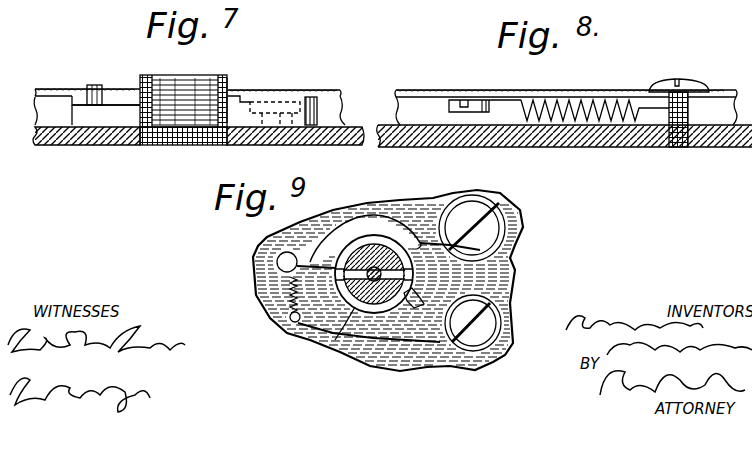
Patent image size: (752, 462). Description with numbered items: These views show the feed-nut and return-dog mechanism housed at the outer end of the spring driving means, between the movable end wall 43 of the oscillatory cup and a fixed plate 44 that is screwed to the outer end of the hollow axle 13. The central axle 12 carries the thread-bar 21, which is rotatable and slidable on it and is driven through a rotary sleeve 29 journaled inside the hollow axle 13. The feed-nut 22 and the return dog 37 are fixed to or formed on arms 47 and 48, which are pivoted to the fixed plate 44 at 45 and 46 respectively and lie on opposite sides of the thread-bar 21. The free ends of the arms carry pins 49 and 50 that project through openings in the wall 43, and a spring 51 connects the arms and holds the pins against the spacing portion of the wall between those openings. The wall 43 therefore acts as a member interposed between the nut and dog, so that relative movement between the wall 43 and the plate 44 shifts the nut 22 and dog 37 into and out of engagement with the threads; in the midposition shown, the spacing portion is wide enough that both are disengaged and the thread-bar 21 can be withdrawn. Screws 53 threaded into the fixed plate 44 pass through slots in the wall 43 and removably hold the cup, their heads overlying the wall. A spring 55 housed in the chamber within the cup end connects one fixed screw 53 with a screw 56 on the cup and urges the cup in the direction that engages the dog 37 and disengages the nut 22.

In FIG. 9, the central axle 12 is at (378, 243).
In FIG. 9, the hollow axle 13 is at (511, 257).
In FIG. 9, the thread-bar 21 is at (376, 294).
In FIG. 7, the feed-nut 22 is at (207, 80).
In FIG. 9, the feed-nut 22 is at (400, 246).
In FIG. 9, the rotary sleeve 29 is at (411, 308).
In FIG. 9, the return dog 37 is at (358, 306).
In FIG. 7, the end wall of the cup 43 is at (310, 97).
In FIG. 8, the end wall of the cup 43 is at (603, 93).
In FIG. 7, the fixed plate 44 is at (86, 147).
In FIG. 8, the fixed plate 44 is at (614, 147).
In FIG. 9, the fixed plate 44 is at (512, 288).
In FIG. 9, the pivot of the feed-nut arm 45 is at (491, 220).
In FIG. 9, the pivot of the return dog arm 46 is at (480, 340).
In FIG. 7, the feed-nut arm 47 is at (113, 112).
In FIG. 9, the feed-nut arm 47 is at (315, 260).
In FIG. 9, the return dog arm 48 is at (395, 322).
In FIG. 7, the pin of the feed-nut arm 49 is at (91, 85).
In FIG. 9, the pin of the feed-nut arm 49 is at (283, 262).
In FIG. 9, the pin of the return dog arm 50 is at (290, 320).
In FIG. 9, the spring 51 is at (290, 295).
In FIG. 8, the screw 53 is at (686, 80).
In FIG. 8, the spring 55 is at (548, 100).
In FIG. 8, the screw on the cup 56 is at (462, 100).